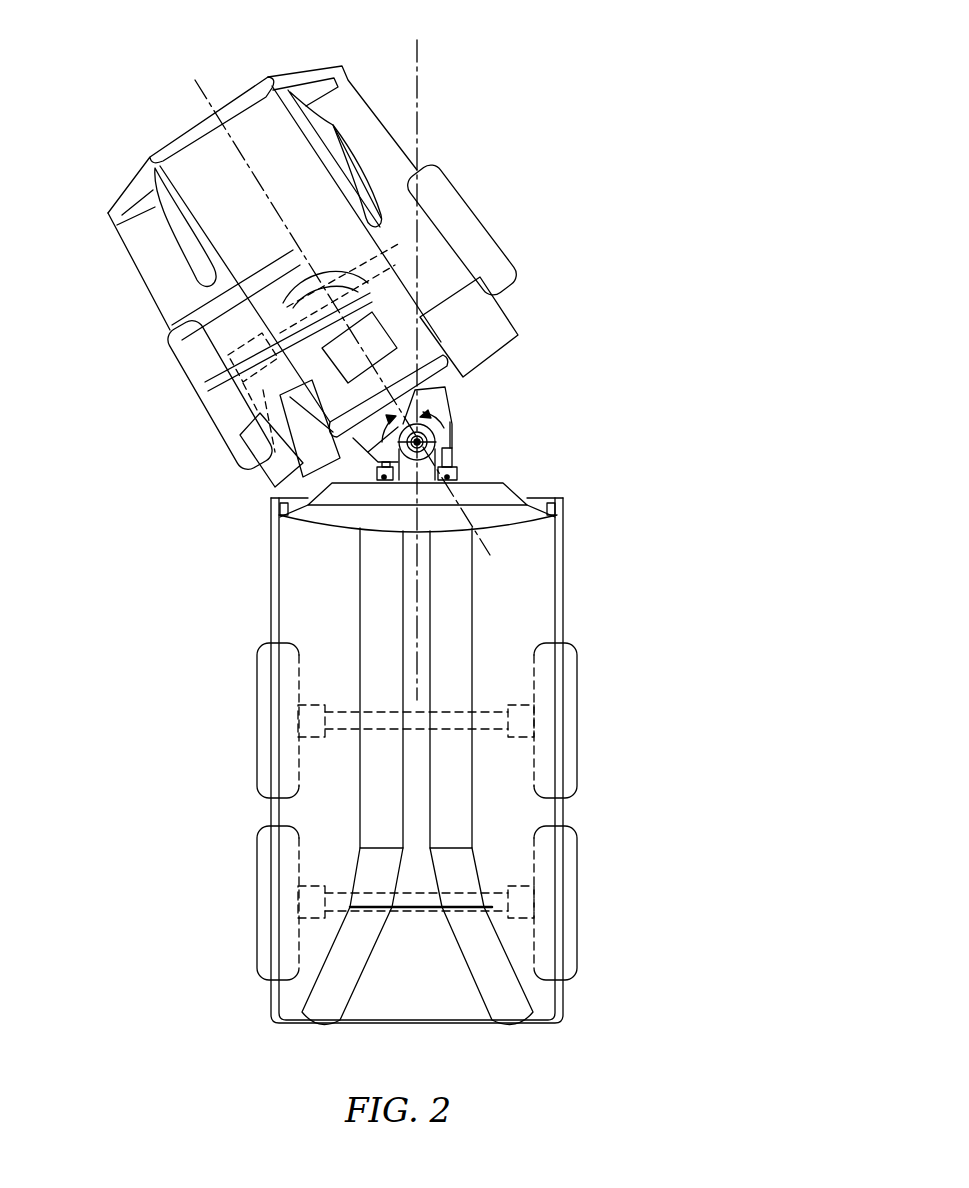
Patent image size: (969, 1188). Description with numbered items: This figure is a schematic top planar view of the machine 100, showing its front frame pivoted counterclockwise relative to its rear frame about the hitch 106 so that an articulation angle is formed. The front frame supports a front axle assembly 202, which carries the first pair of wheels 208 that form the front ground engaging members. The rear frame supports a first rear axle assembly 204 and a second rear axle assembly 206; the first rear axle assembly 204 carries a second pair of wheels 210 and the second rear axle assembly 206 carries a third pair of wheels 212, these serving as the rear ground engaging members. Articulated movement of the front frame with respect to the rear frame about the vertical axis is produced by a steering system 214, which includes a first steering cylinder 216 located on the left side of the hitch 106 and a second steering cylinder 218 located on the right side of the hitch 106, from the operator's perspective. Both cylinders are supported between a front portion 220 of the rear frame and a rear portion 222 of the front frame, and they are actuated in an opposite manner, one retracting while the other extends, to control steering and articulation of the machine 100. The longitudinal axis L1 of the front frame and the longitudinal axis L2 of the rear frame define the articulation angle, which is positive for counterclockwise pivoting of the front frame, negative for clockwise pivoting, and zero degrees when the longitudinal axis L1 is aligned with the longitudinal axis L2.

The machine 100 is at (645, 76).
The hitch 106 is at (432, 445).
The front axle assembly 202 is at (215, 352).
The first rear axle assembly 204 is at (445, 712).
The second rear axle assembly 206 is at (445, 893).
The first pair of wheels 208 is at (487, 262).
The second pair of wheels 210 is at (258, 722).
The third pair of wheels 212 is at (258, 905).
The steering system 214 is at (385, 345).
The first steering cylinder 216 is at (372, 466).
The second steering cylinder 218 is at (455, 464).
The front portion 220 is at (495, 493).
The rear portion 222 is at (438, 398).
The longitudinal axis L1 is at (192, 80).
The longitudinal axis L2 is at (417, 82).